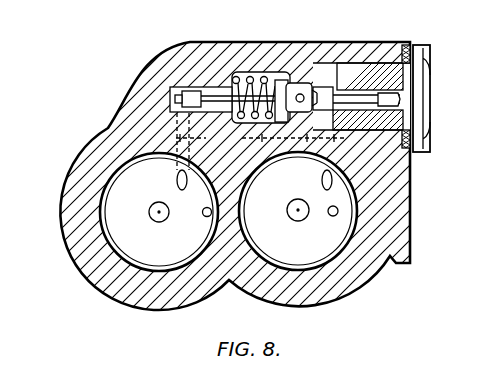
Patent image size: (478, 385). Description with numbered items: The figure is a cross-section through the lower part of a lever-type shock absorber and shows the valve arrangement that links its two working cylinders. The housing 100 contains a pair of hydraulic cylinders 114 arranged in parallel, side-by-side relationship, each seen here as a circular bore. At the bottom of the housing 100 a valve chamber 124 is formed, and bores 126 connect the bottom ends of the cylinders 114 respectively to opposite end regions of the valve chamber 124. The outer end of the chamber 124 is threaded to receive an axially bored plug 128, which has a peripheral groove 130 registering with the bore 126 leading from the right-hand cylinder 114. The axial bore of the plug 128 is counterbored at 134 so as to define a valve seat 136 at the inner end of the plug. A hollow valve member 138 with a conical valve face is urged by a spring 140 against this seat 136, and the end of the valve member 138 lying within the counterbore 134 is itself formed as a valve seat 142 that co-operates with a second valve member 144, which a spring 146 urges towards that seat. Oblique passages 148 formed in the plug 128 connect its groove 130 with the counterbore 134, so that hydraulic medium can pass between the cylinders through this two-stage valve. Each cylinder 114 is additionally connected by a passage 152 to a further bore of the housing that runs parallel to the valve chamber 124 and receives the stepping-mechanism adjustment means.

The housing 100 is at (108, 132).
The hydraulic cylinders 114 is at (100, 212).
The valve chamber 124 is at (240, 72).
The bores 126 is at (260, 141).
The plug 128 is at (442, 98).
The peripheral groove 130 is at (340, 96).
The counterbore 134 is at (310, 88).
The valve seat 136 is at (310, 88).
The hollow valve member 138 is at (278, 78).
The spring 140 is at (210, 86).
The valve seat 142 is at (335, 90).
The second valve member 144 is at (398, 96).
The spring 146 is at (208, 86).
The oblique passages 148 is at (408, 60).
The passage 152 is at (212, 213).